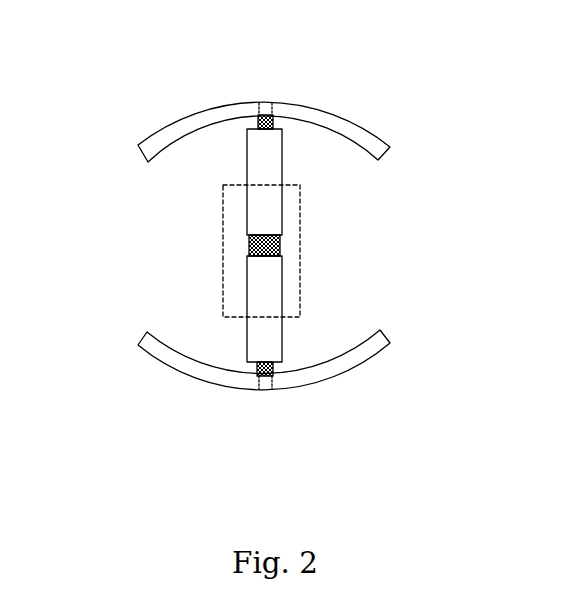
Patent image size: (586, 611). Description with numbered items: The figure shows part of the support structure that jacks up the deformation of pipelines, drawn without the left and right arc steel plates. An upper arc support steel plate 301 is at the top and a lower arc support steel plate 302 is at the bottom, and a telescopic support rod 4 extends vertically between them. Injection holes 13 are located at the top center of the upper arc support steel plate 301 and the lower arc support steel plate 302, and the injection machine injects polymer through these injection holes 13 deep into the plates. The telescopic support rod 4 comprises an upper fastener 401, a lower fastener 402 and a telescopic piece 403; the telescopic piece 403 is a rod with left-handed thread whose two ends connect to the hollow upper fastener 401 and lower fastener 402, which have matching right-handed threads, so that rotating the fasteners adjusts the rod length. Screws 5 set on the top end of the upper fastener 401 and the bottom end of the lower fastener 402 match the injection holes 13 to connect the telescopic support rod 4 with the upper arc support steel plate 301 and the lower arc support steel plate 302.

The upper arc support steel plate 301 is at (338, 127).
The lower arc support steel plate 302 is at (350, 362).
The telescopic support rod 4 is at (301, 225).
The upper fastener 401 is at (265, 160).
The lower fastener 402 is at (265, 340).
The telescopic piece 403 is at (248, 247).
The screws 5 is at (272, 116).
The injection holes 13 is at (263, 108).